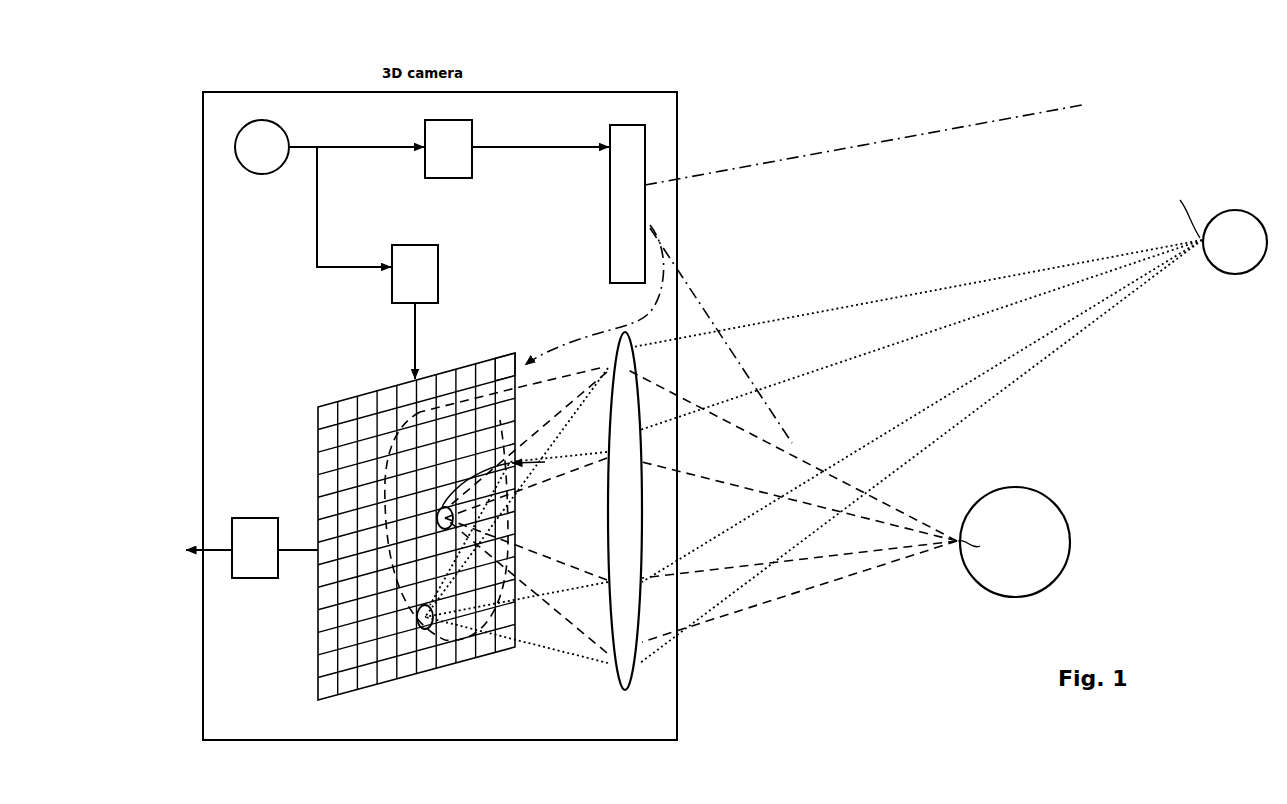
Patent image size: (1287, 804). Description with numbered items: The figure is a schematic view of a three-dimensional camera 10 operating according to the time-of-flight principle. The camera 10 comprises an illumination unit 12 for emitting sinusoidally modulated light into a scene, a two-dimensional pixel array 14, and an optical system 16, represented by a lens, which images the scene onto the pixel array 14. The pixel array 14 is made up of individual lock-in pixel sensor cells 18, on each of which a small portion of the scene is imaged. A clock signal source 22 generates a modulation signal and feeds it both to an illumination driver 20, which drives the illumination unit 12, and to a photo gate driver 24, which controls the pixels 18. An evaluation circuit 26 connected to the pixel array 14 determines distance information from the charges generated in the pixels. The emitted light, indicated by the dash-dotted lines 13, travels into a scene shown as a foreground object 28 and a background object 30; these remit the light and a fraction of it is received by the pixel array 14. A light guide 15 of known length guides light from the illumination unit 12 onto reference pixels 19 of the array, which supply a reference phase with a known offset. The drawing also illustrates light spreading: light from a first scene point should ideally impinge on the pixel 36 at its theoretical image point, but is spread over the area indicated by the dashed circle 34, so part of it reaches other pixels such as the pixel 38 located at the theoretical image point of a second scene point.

The 3D camera 10 is at (700, 693).
The illumination unit 12 is at (610, 172).
The dash-dotted lines 13 is at (760, 166).
The two-dimensional pixel array 14 is at (322, 377).
The light guide 15 is at (580, 338).
The optical system 16 is at (618, 678).
The lock-in pixel sensor cells 18 is at (318, 665).
The reference pixels 19 is at (500, 352).
The illumination driver 20 is at (460, 178).
The clock signal source 22 is at (262, 174).
The photo gate driver 24 is at (438, 272).
The evaluation circuit 26 is at (247, 516).
The foreground object 28 is at (1010, 487).
The background object 30 is at (1219, 270).
The dashed circle 34 is at (484, 428).
The pixel corresponding to the theoretical image point of X1 36 is at (545, 462).
The pixel located at the theoretical image point of X2 38 is at (423, 632).